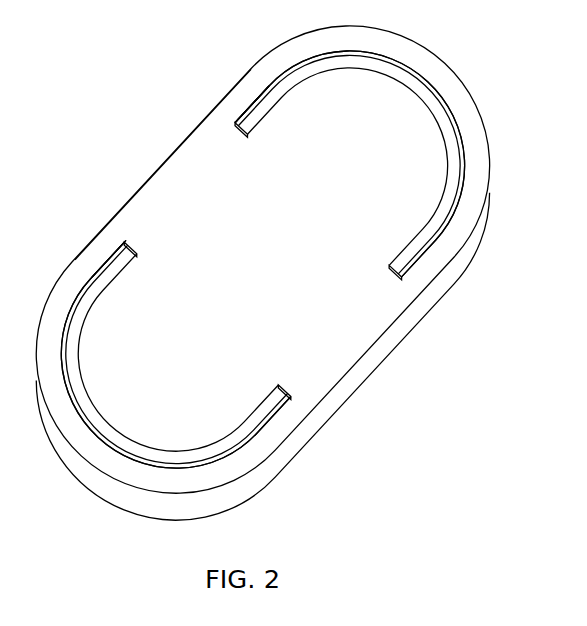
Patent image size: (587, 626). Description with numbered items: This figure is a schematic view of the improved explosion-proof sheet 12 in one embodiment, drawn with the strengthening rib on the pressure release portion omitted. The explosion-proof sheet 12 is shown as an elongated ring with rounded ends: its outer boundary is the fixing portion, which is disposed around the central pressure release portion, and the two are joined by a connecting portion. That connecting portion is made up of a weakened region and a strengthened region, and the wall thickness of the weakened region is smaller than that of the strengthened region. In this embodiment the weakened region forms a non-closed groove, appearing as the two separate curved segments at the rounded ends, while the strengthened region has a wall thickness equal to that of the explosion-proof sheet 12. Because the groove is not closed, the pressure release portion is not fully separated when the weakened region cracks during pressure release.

The explosion-proof sheet 12 is at (280, 288).